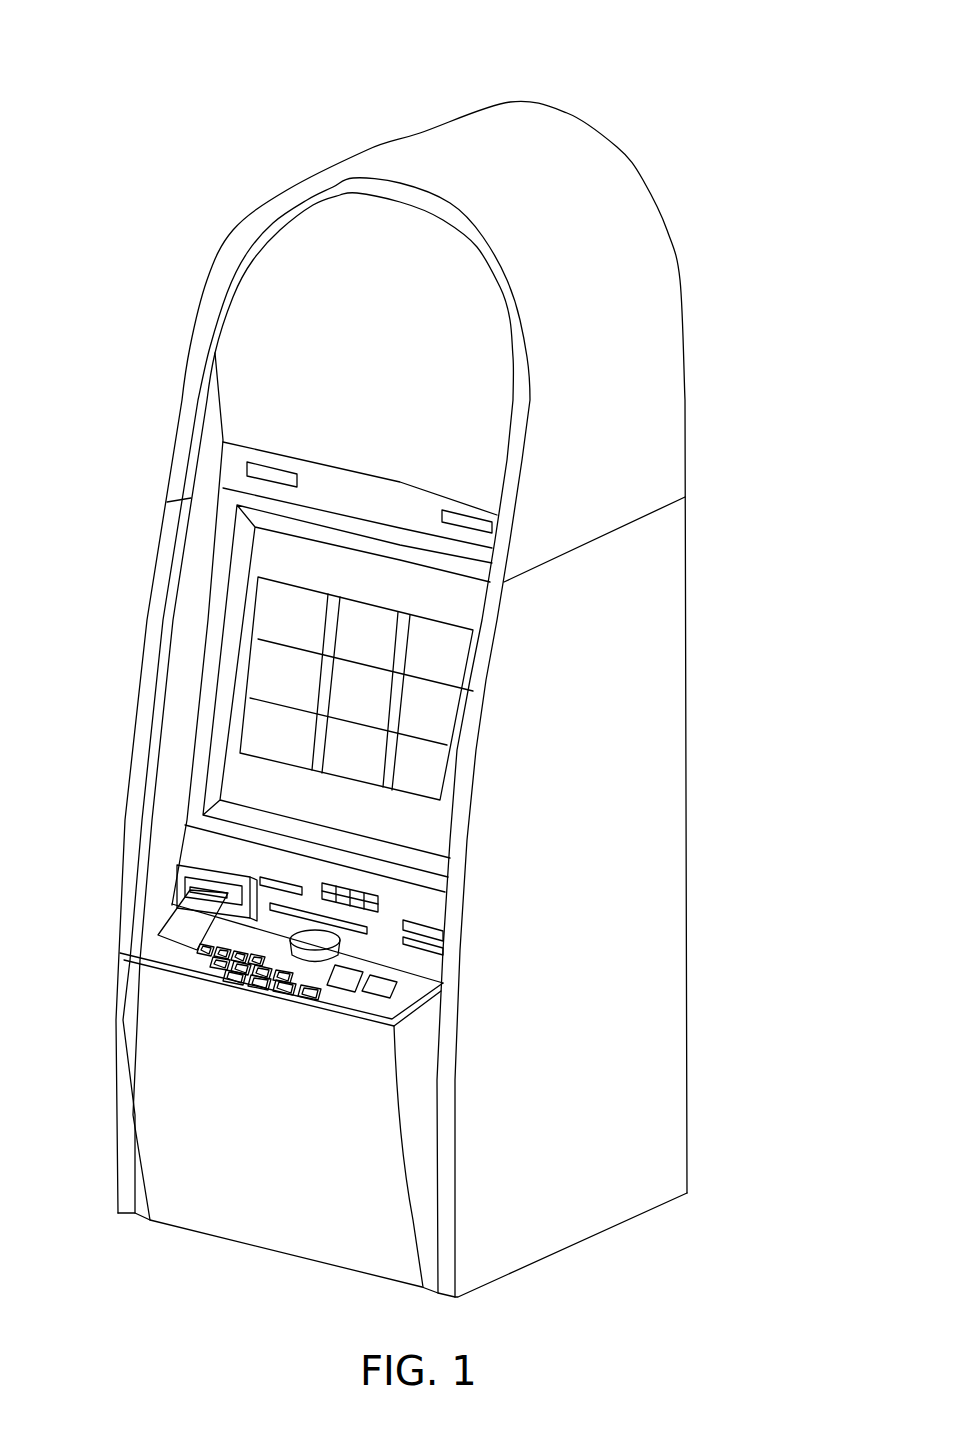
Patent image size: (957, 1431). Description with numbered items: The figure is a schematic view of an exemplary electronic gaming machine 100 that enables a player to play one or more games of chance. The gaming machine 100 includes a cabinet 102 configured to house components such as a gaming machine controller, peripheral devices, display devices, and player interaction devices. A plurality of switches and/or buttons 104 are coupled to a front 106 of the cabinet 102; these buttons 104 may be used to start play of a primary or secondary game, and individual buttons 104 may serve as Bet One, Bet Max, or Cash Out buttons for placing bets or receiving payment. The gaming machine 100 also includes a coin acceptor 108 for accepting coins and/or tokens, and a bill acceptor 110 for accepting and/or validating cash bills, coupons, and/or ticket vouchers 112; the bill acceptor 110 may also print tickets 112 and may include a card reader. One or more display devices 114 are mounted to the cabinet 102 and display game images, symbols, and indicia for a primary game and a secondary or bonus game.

The gaming machine 100 is at (415, 655).
The cabinet 102 is at (623, 197).
The switches and/or buttons 104 is at (213, 980).
The front 106 is at (232, 462).
The coin acceptor 108 is at (308, 993).
The bill acceptor 110 is at (177, 863).
The ticket voucher 112 is at (182, 928).
The display device 114 is at (432, 767).